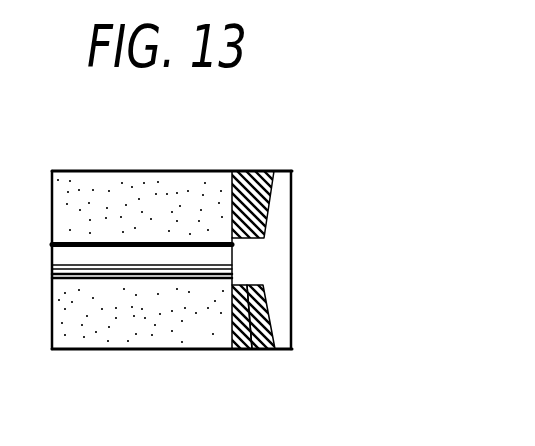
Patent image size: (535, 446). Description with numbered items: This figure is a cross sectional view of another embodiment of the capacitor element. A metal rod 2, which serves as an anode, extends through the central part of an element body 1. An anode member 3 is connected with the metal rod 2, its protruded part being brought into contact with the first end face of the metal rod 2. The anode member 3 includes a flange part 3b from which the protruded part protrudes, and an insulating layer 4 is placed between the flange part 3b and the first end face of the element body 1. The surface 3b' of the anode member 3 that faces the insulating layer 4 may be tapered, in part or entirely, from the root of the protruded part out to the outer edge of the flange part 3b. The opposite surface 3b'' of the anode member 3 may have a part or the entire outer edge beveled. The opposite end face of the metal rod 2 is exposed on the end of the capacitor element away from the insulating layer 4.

The element body 1 is at (175, 333).
The metal rod 2 is at (156, 259).
The anode member 3 is at (306, 244).
The flange part 3b is at (324, 253).
The tapered surface of anode member 3b' is at (265, 316).
The beveled surface of anode member 3b'' is at (310, 321).
The insulating layer 4 is at (257, 171).